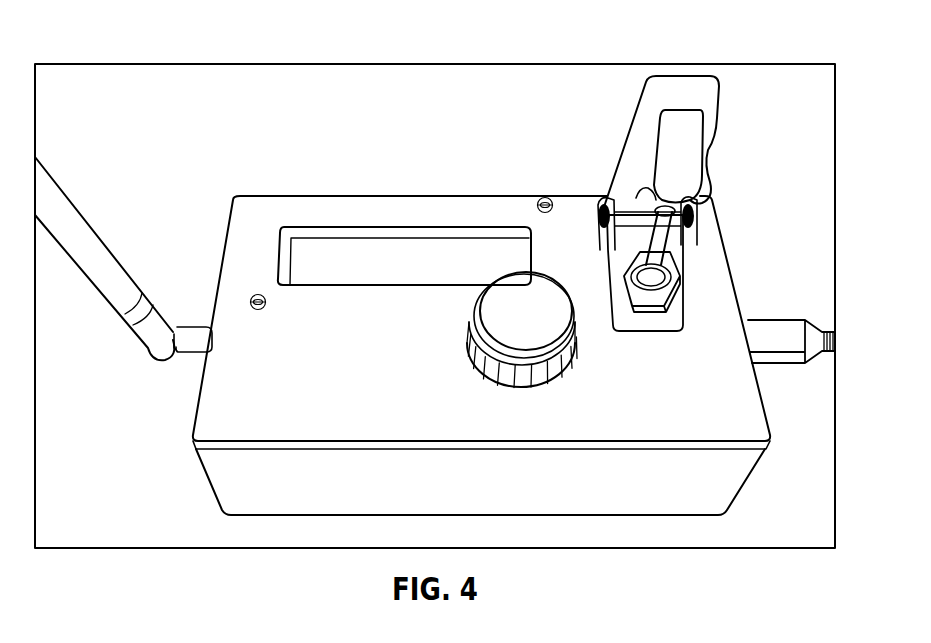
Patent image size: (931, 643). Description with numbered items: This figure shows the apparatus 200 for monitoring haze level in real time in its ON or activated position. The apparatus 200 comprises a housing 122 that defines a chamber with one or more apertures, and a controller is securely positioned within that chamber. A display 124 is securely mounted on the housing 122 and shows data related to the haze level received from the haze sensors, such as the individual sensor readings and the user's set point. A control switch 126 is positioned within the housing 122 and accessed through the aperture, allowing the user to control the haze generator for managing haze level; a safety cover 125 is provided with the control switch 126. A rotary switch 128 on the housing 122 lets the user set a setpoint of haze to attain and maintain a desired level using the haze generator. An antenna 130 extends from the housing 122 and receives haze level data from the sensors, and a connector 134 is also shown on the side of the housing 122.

The control device assembly 200 is at (160, 46).
The housing 122 is at (730, 420).
The display 124 is at (366, 246).
The switch guard lever 125 is at (708, 94).
The toggle switch 126 is at (660, 238).
The rotary knob 128 is at (525, 292).
The antenna 130 is at (62, 218).
The cable connector 134 is at (770, 336).